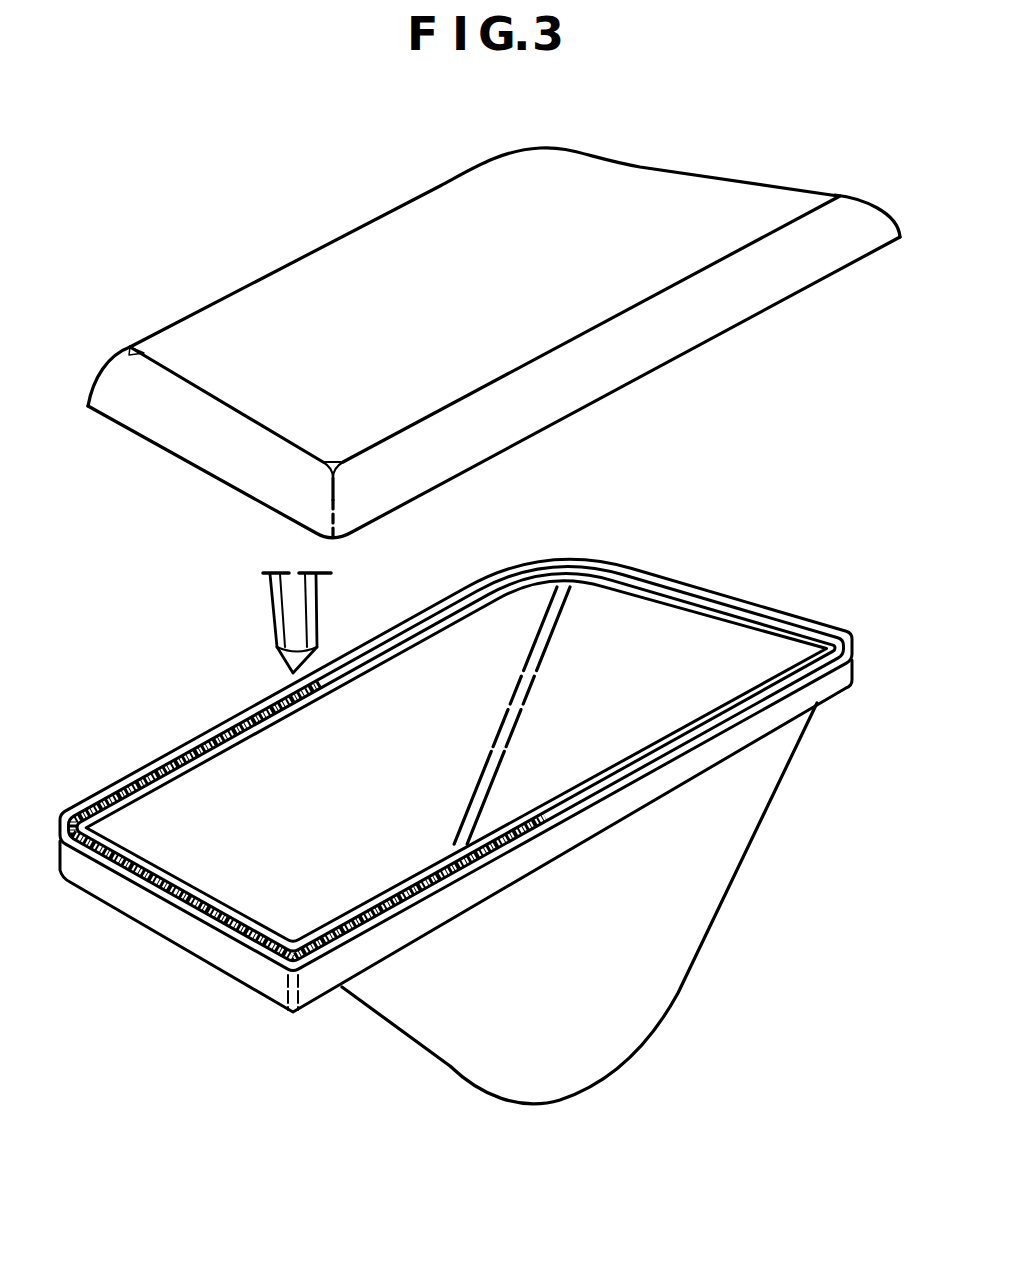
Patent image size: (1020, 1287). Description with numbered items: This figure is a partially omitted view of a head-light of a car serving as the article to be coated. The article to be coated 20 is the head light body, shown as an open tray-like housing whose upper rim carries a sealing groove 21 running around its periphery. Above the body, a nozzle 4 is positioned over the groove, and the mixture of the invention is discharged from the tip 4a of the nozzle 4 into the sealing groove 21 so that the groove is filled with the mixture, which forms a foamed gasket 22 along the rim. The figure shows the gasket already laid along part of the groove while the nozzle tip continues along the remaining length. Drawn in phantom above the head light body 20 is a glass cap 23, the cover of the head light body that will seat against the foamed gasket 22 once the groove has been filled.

The glass cap 23 is at (602, 187).
The nozzle 4 is at (277, 613).
The tip 4a is at (290, 672).
The foamed gasket 22 is at (213, 733).
The sealing groove 21 is at (827, 637).
The article to be coated 20 is at (670, 938).